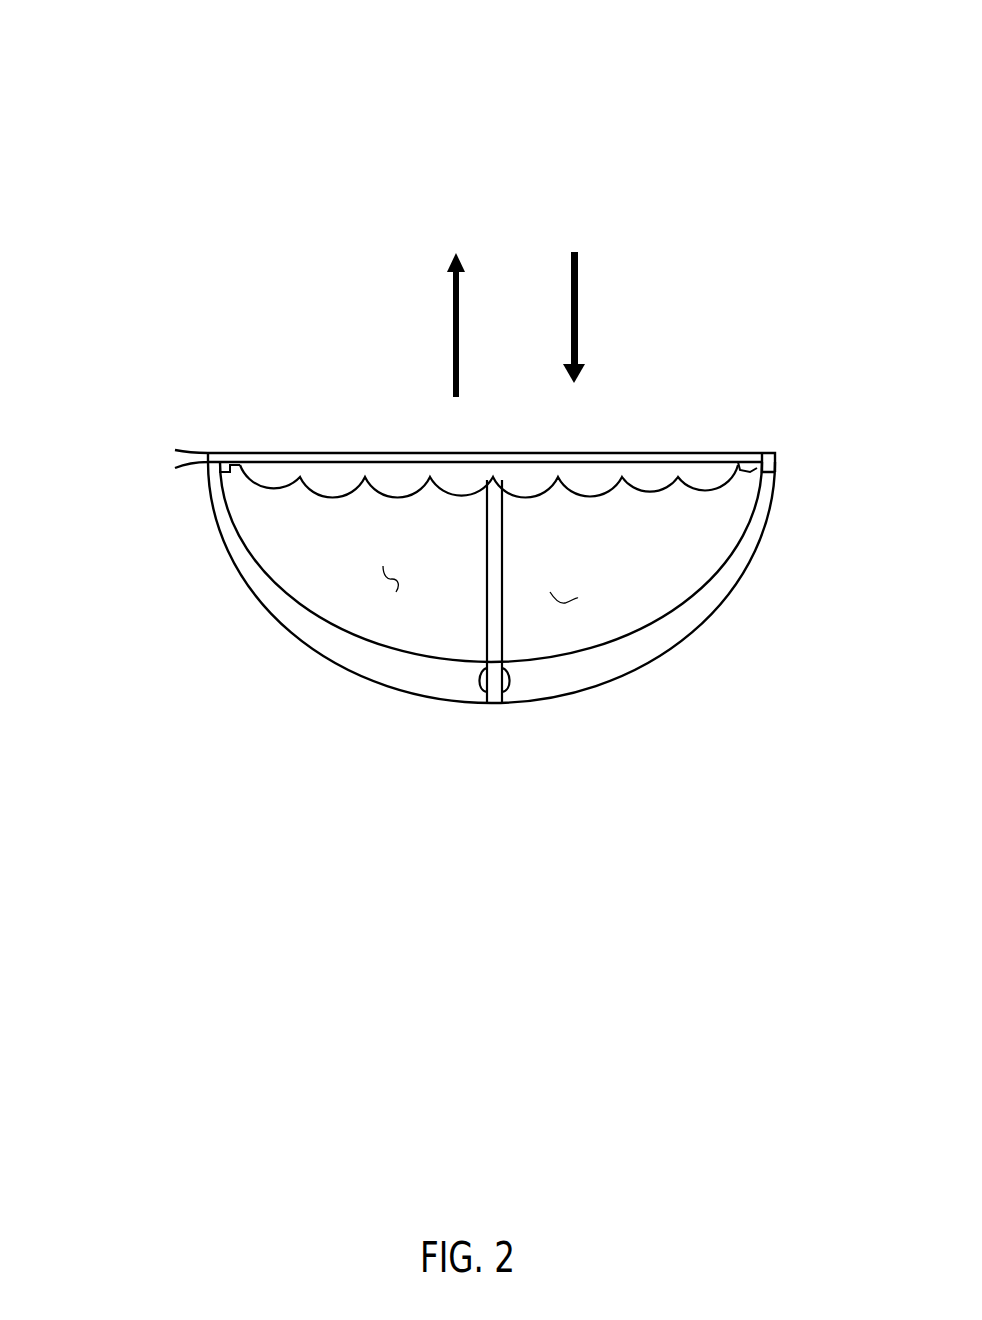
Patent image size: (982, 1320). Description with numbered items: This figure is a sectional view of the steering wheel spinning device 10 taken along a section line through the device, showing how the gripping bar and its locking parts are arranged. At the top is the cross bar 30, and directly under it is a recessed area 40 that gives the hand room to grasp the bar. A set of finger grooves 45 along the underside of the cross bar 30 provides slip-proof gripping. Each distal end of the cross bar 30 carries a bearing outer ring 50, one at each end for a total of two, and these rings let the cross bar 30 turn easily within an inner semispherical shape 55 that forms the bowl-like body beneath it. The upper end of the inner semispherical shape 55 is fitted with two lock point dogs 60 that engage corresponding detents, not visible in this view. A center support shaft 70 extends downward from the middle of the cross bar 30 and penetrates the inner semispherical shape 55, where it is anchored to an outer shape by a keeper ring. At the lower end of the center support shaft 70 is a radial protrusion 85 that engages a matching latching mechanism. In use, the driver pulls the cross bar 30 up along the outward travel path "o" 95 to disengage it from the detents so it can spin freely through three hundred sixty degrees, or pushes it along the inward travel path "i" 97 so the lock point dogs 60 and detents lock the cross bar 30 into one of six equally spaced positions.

The steering wheel spinning device 10 is at (150, 148).
The cross bar 30 is at (528, 485).
The recessed area 40 is at (390, 578).
The finger grooves 45 is at (592, 502).
The bearing outer ring 50 is at (762, 453).
The inner semispherical shape 55 is at (418, 657).
The lock point dogs 60 is at (220, 473).
The center support shaft 70 is at (490, 550).
The radial protrusion 85 is at (495, 677).
The outward travel path "o" 95 is at (448, 285).
The inward travel path "i" 97 is at (575, 250).